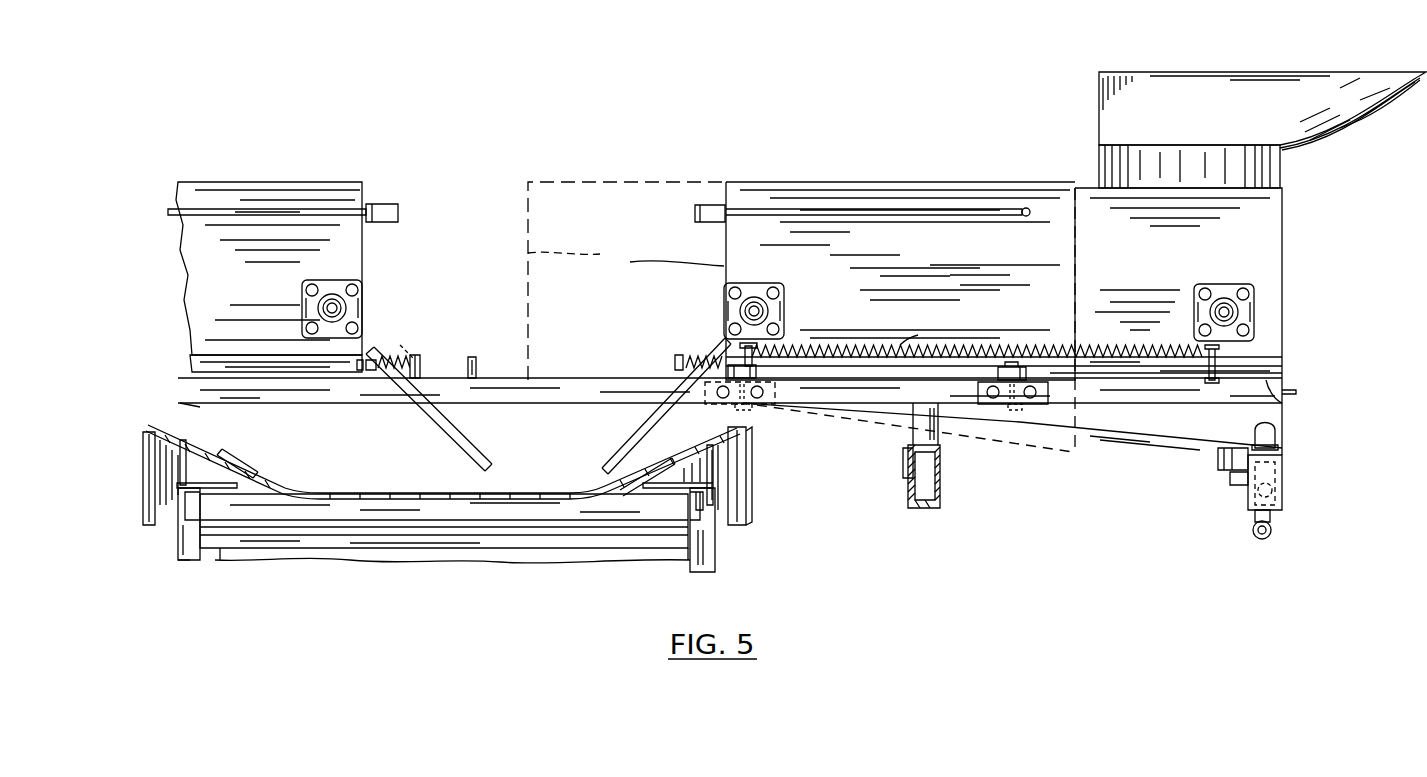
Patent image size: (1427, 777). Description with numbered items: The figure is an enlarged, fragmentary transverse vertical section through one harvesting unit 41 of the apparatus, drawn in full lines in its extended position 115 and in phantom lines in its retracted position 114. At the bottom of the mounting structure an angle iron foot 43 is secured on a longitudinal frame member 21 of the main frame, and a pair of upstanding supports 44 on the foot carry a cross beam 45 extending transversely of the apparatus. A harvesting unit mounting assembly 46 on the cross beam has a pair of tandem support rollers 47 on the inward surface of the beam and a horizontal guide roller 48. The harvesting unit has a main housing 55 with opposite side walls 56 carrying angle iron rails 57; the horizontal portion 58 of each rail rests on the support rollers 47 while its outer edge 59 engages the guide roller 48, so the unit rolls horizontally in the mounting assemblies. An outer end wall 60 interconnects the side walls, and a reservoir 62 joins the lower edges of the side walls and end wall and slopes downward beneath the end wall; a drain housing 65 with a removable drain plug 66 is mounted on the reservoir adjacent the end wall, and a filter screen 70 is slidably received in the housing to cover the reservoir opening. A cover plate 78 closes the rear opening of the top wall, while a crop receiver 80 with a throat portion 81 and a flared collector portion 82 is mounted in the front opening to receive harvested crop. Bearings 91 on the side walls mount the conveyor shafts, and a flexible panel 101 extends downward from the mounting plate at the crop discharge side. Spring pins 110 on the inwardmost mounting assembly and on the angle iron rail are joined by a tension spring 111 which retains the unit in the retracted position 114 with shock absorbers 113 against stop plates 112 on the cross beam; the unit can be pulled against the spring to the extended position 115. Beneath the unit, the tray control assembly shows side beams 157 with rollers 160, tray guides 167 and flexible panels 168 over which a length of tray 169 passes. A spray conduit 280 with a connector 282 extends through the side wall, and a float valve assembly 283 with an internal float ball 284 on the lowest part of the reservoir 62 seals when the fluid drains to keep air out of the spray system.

The longitudinal frame member 21 is at (942, 474).
The harvesting unit 41 is at (1298, 272).
The angle iron foot 43 is at (904, 462).
The support 44 is at (914, 426).
The cross beam 45 is at (478, 392).
The harvesting unit mounting assembly 46 is at (800, 355).
The support roller 47 is at (726, 410).
The guide roller 48 is at (732, 365).
The main housing 55 is at (626, 262).
The side wall 56 is at (1059, 268).
The angle iron rail 57 is at (1258, 366).
The horizontal portion 58 is at (1266, 380).
The outer edge 59 is at (1250, 380).
The outer end wall 60 is at (1283, 306).
The reservoir 62 is at (1140, 436).
The drain housing 65 is at (1218, 458).
The drain plug 66 is at (1240, 480).
The filter screen 70 is at (1290, 392).
The cover plate 78 is at (885, 182).
The crop receiver 80 is at (1198, 78).
The throat portion 81 is at (1120, 164).
The flared collector portion 82 is at (1360, 108).
The bearing 91 is at (748, 292).
The flexible panel 101 is at (640, 447).
The spring pin 110 is at (746, 352).
The tension spring 111 is at (905, 348).
The stop plate 112 is at (468, 360).
The shock absorber 113 is at (676, 363).
The retracted position 114 is at (558, 180).
The extended position 115 is at (748, 180).
The side beam 157 is at (185, 515).
The roller 160 is at (450, 548).
The tray guide 167 is at (162, 452).
The flexible panel 168 is at (258, 492).
The tray 169 is at (357, 492).
The spray conduit 280 is at (950, 216).
The connector 282 is at (697, 217).
The float valve assembly 283 is at (1283, 474).
The float ball 284 is at (1270, 488).